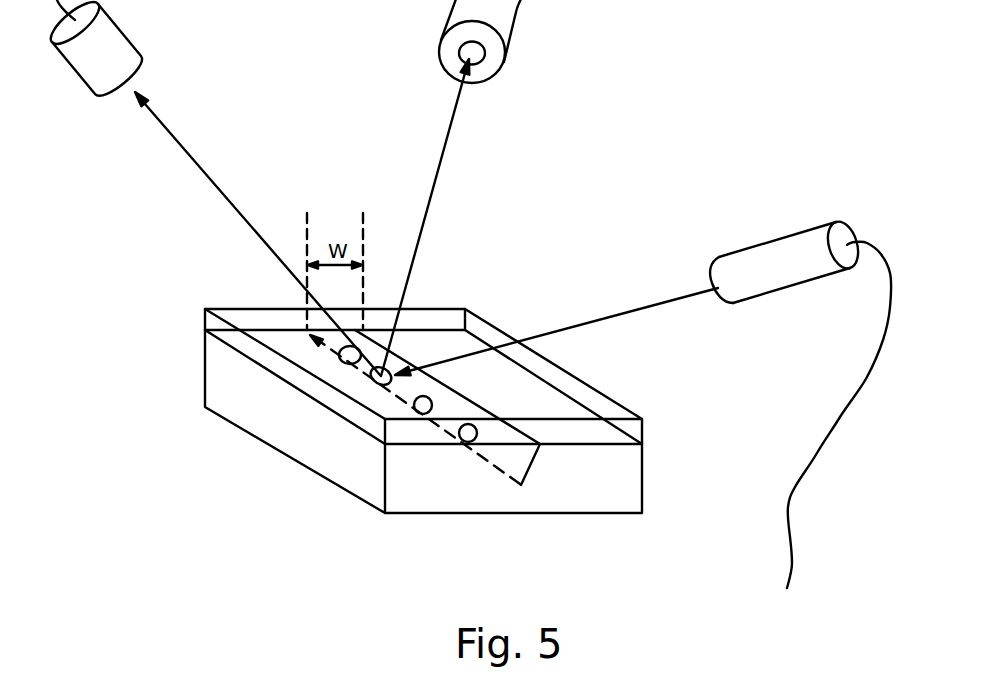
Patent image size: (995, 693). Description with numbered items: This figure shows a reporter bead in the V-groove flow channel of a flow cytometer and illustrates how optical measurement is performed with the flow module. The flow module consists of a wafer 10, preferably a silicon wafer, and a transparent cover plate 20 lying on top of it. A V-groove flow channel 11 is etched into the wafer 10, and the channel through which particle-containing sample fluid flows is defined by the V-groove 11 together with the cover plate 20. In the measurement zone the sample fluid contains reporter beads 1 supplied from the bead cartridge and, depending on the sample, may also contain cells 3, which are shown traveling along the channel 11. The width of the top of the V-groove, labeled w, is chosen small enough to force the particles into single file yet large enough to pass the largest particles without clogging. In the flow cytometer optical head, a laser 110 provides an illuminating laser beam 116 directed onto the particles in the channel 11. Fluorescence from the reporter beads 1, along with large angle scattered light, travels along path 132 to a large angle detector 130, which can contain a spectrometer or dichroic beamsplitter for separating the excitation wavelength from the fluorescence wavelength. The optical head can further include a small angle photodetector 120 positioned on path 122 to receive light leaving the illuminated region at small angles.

The reporter beads 1 is at (394, 370).
The cells 3 is at (428, 398).
The wafer 10 is at (643, 484).
The flow channel 11 is at (532, 462).
The transparent cover plate 20 is at (643, 424).
The laser 110 is at (767, 240).
The illuminating laser beam 116 is at (613, 313).
The small angle photodetector 120 is at (512, 33).
The small angle path 122 is at (445, 157).
The large angle detector 130 is at (130, 37).
The large angle path 132 is at (185, 157).